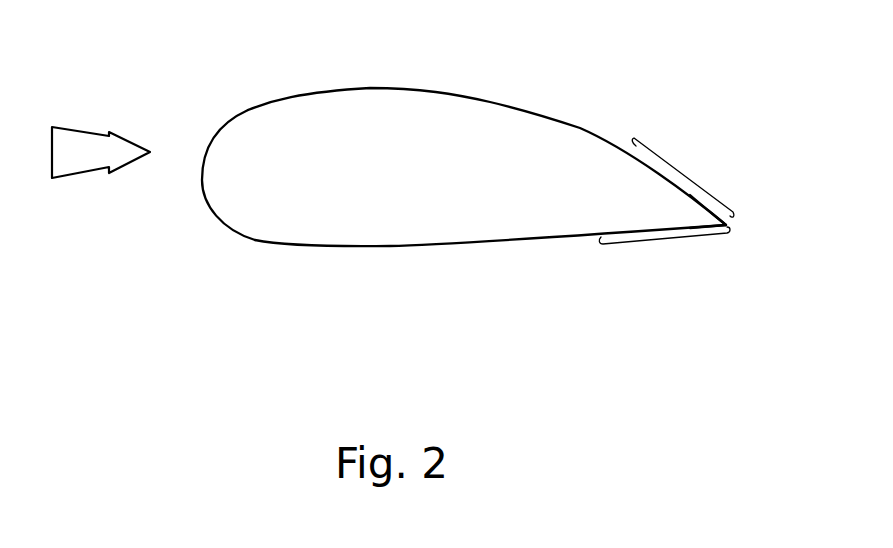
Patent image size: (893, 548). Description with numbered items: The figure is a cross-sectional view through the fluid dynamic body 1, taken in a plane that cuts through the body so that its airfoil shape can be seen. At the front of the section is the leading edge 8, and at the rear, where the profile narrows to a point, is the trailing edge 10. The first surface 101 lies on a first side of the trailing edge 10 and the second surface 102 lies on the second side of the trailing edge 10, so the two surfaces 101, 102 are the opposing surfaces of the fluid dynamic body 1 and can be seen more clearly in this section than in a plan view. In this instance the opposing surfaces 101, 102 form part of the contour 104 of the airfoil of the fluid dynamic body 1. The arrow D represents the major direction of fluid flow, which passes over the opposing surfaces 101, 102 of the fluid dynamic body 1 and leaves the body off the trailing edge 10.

The fluid dynamic body 1 is at (463, 172).
The leading edge 8 is at (202, 180).
The trailing edge 10 is at (730, 228).
The first surface 101 is at (399, 88).
The second surface 102 is at (380, 249).
The contour 104 is at (682, 168).
The arrow representing major direction of fluid flow D is at (90, 152).